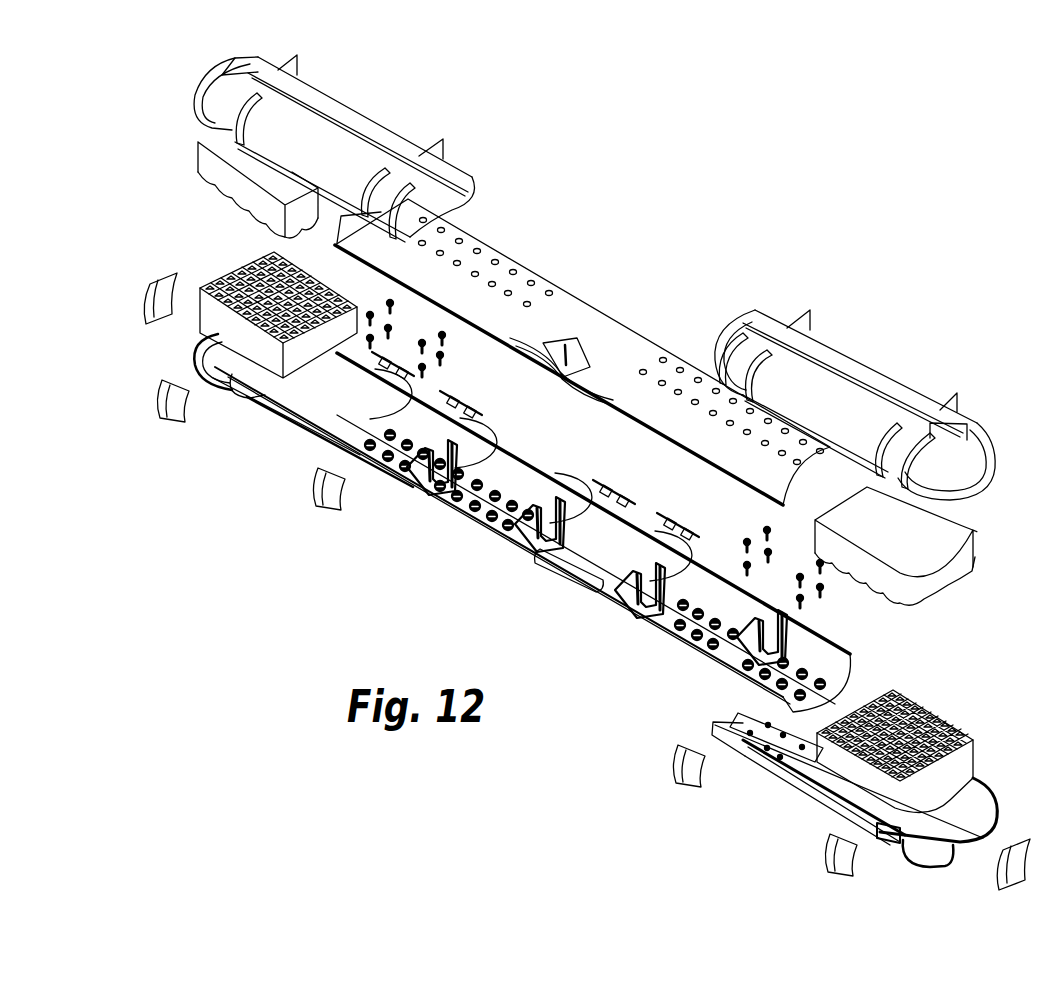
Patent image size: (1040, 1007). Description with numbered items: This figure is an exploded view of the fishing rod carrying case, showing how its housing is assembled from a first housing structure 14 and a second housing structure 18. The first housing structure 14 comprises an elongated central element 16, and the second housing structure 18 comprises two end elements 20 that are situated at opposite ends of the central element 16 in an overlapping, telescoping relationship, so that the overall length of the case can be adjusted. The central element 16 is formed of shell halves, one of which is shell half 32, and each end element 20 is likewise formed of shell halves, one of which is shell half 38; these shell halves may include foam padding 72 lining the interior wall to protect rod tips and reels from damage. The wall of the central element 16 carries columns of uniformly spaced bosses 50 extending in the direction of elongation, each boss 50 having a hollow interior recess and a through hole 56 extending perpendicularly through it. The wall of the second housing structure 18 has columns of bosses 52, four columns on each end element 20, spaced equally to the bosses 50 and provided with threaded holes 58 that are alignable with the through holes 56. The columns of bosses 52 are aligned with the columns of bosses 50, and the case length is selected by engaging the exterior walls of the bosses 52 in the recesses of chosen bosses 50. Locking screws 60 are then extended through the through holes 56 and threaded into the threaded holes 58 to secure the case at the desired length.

The first housing structure 14 is at (650, 234).
The central element 16 is at (607, 313).
The second housing structure 18 is at (594, 272).
The end elements 20 is at (367, 113).
The shell half 32 is at (653, 343).
The shell half 38 is at (305, 92).
The bosses 50 is at (488, 527).
The bosses 52 is at (767, 770).
The through hole 56 is at (512, 268).
The threaded holes 58 is at (770, 772).
The locking screws 60 is at (823, 592).
The foam padding 72 is at (943, 533).